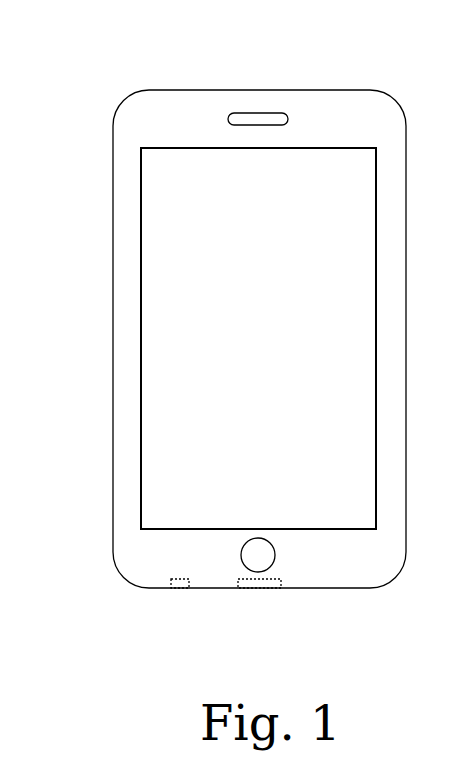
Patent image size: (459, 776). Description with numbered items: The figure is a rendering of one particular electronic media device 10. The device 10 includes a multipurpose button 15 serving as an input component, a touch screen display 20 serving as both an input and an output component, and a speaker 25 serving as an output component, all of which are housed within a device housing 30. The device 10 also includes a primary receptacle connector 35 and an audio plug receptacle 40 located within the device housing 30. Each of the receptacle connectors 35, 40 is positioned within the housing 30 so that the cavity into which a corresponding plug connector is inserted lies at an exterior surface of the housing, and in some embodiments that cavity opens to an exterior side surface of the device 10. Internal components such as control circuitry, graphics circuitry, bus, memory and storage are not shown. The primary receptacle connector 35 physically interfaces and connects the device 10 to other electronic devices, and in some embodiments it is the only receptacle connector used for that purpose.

The electronic media device 10 is at (231, 341).
The multipurpose button 15 is at (258, 556).
The touch screen display 20 is at (202, 418).
The speaker 25 is at (259, 112).
The device housing 30 is at (112, 357).
The primary receptacle connector 35 is at (273, 590).
The audio plug receptacle 40 is at (178, 590).